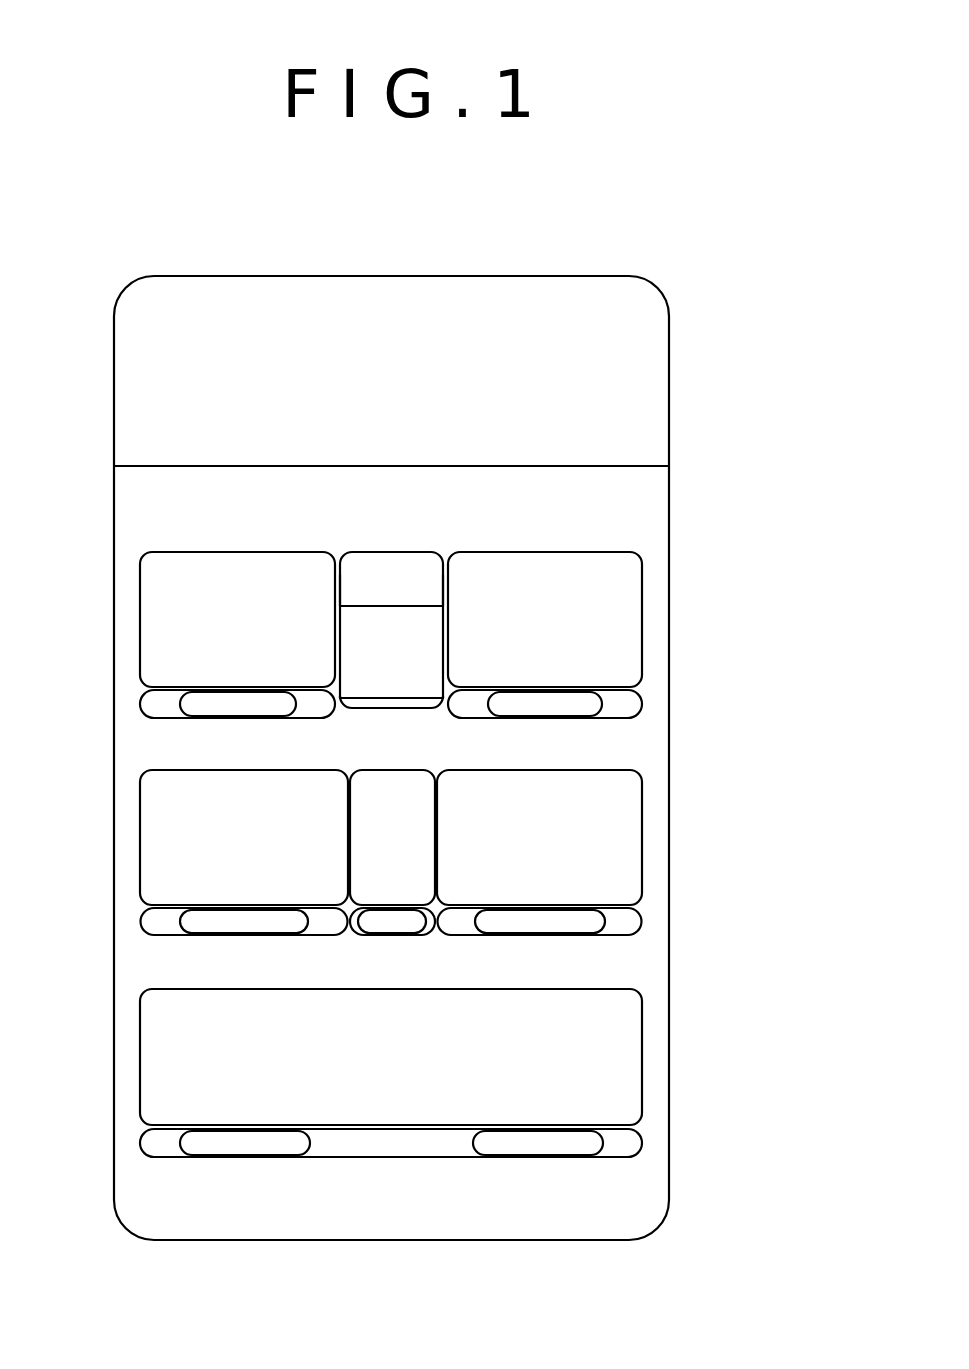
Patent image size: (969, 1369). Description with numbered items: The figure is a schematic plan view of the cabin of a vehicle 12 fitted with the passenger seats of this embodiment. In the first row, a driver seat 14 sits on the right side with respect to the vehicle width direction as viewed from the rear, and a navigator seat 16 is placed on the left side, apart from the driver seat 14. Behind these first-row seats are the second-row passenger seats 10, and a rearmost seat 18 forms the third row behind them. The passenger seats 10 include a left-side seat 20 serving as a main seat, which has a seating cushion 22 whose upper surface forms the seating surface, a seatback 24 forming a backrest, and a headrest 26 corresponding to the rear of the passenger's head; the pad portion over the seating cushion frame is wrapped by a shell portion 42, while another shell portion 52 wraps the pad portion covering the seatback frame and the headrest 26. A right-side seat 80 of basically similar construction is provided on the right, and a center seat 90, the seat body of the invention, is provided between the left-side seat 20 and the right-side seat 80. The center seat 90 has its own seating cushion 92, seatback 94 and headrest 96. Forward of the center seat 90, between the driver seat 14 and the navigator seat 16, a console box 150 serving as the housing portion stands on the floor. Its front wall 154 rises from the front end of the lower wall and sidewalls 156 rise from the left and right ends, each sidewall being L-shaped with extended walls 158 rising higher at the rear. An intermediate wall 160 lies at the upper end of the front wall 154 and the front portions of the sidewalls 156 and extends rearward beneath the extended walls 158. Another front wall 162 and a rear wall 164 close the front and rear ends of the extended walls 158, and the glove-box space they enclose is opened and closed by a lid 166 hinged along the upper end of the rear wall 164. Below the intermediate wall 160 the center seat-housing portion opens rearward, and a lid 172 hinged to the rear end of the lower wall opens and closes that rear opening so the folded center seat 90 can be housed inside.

The passenger seats 10 is at (394, 879).
The vehicle 12 is at (732, 352).
The driver seat 14 is at (608, 542).
The navigator seat 16 is at (186, 545).
The rearmost seat 18 is at (605, 977).
The left-side seat 20 is at (138, 828).
The seating cushion 22 is at (394, 813).
The seatback 24 is at (394, 934).
The headrest 26 is at (238, 920).
The shell portion 42 is at (243, 790).
The shell portion 52 is at (167, 927).
The right-side seat 80 is at (643, 853).
The center seat 90 is at (397, 940).
The seating cushion 92 is at (402, 795).
The seatback 94 is at (352, 933).
The headrest 96 is at (385, 912).
The console box 150 is at (396, 615).
The front wall 154 is at (398, 552).
The sidewalls 156 is at (340, 588).
The extended walls 158 is at (340, 660).
The intermediate wall 160 is at (392, 545).
The front wall 162 is at (408, 605).
The rear wall 164 is at (405, 703).
The lid 166 is at (392, 647).
The lid 172 is at (377, 703).